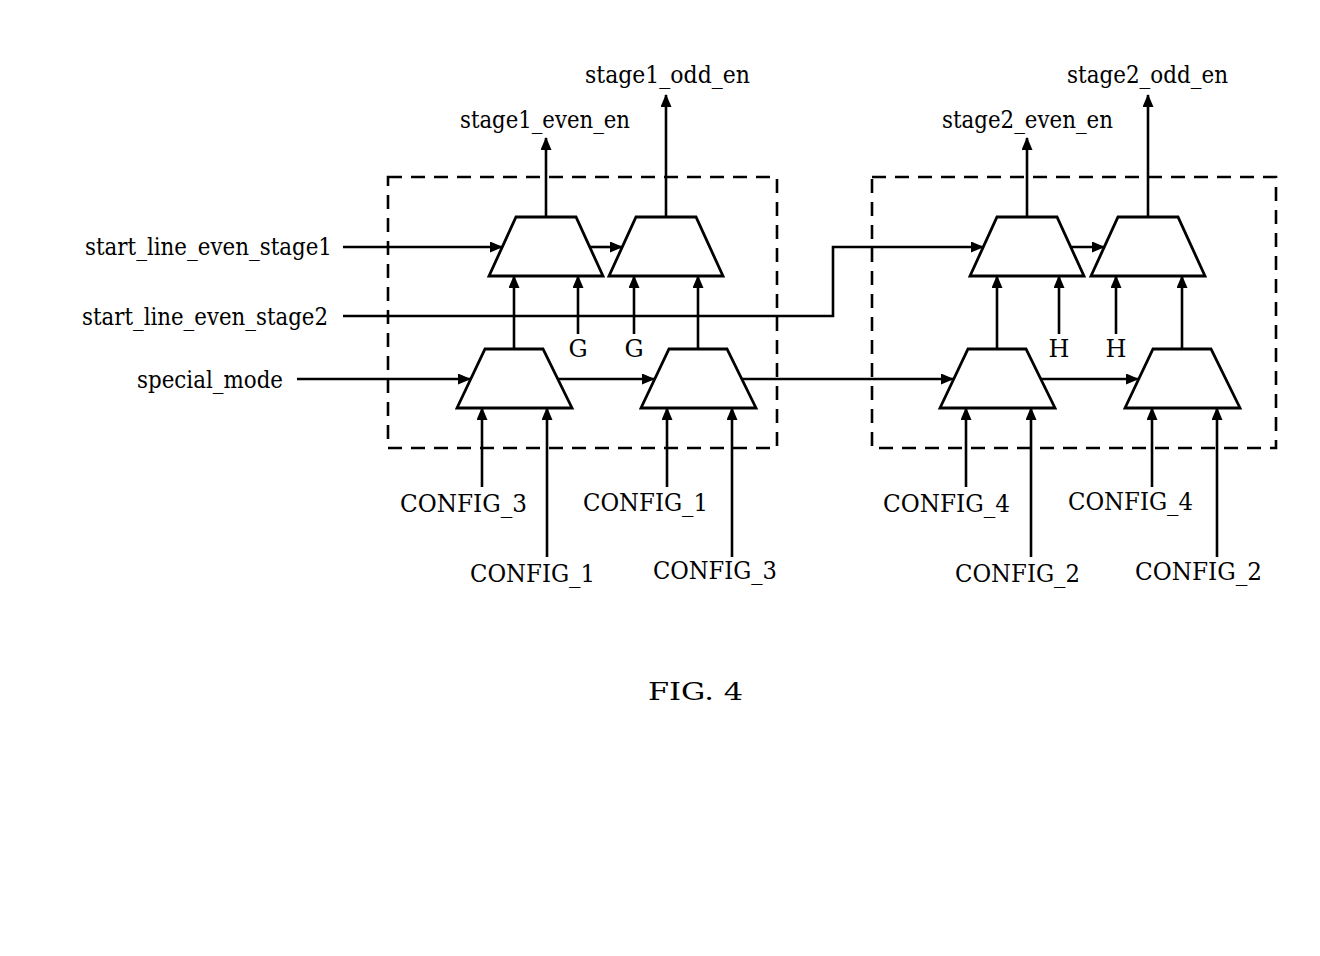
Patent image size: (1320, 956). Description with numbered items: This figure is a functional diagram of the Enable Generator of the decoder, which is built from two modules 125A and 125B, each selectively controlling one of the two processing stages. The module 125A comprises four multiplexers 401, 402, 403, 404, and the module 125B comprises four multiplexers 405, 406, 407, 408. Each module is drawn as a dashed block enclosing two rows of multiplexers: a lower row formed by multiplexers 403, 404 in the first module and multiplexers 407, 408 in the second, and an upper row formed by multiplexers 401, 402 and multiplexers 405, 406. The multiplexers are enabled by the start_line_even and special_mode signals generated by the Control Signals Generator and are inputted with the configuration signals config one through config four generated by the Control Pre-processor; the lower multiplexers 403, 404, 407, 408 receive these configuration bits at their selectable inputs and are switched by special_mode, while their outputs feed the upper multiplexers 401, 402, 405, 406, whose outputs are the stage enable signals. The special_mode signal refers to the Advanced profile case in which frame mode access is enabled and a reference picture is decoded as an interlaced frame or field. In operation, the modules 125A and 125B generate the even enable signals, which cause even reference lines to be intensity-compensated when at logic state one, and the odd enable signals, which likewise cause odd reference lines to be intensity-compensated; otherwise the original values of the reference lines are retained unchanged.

The module 125A is at (445, 177).
The module 125B is at (1220, 177).
The multiplexer 401 is at (520, 217).
The multiplexer 402 is at (689, 217).
The multiplexer 403 is at (465, 409).
The multiplexer 404 is at (651, 409).
The multiplexer 405 is at (1011, 217).
The multiplexer 406 is at (1170, 217).
The multiplexer 407 is at (945, 409).
The multiplexer 408 is at (1133, 409).